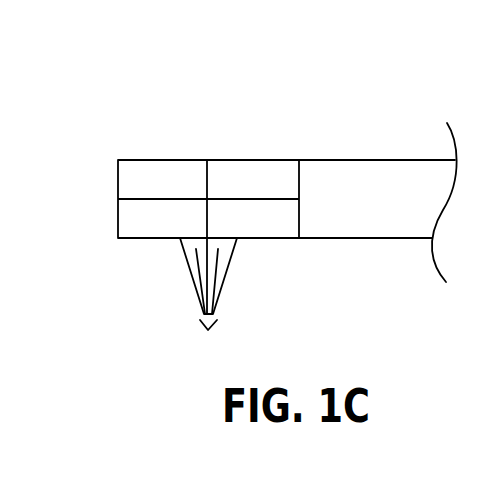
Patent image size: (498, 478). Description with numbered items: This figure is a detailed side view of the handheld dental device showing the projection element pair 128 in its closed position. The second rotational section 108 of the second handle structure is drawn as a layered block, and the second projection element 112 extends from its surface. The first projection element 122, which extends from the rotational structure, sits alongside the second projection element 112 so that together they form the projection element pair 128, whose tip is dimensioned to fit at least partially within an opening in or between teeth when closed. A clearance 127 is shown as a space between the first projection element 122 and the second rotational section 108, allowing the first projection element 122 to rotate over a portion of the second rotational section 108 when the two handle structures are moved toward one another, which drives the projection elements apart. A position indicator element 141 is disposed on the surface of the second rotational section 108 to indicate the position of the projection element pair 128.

The second rotational section 108 is at (148, 228).
The position indicator element 141 is at (207, 160).
The clearance 127 is at (196, 242).
The first projection element 122 is at (200, 265).
The second projection element 112 is at (220, 262).
The projection element pair 128 is at (208, 333).